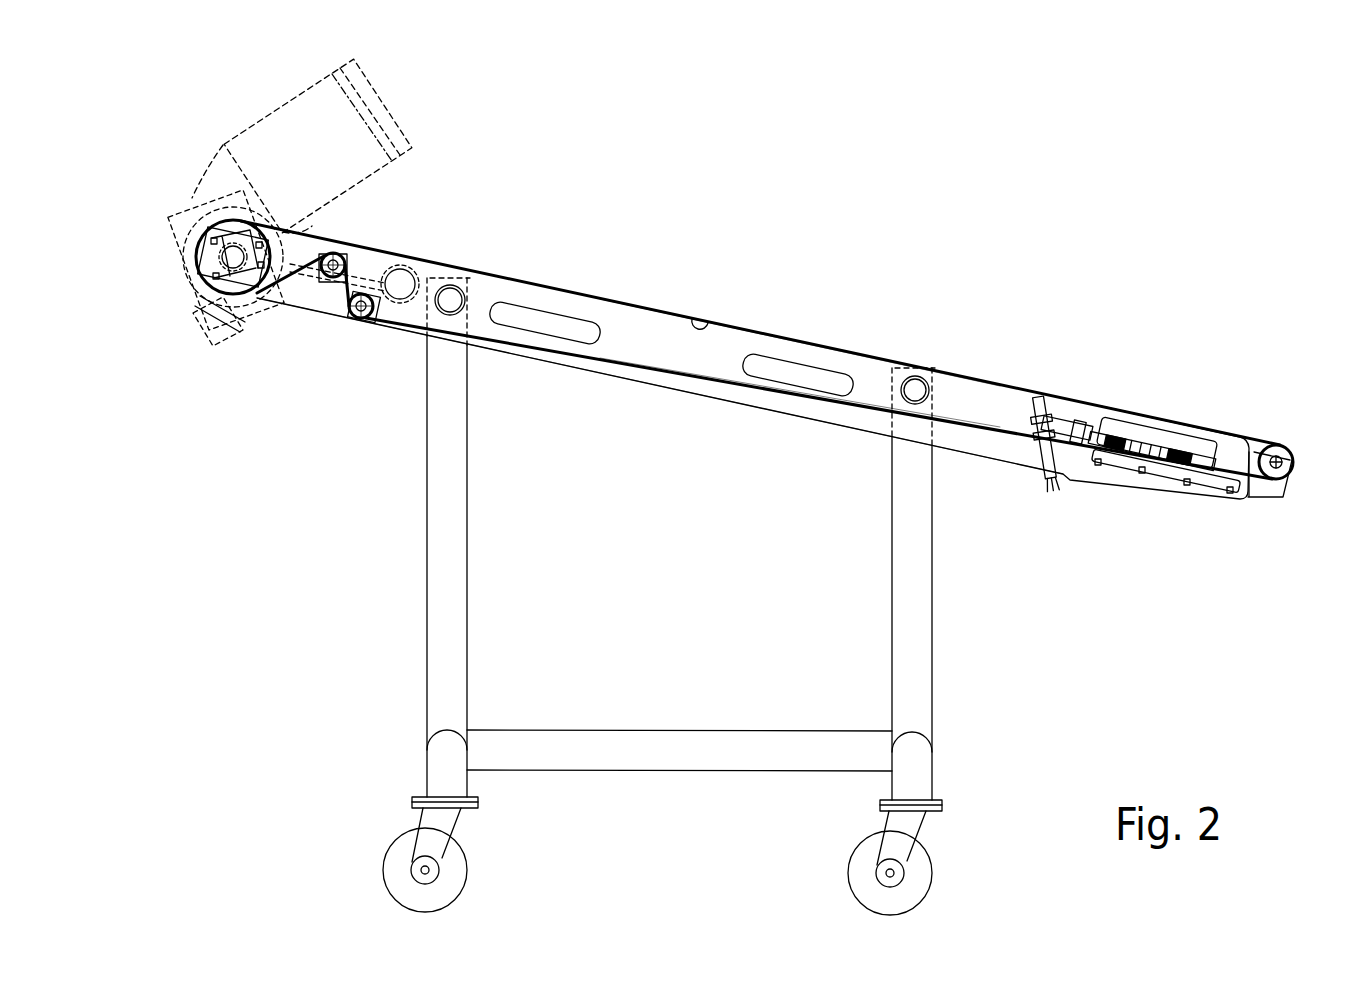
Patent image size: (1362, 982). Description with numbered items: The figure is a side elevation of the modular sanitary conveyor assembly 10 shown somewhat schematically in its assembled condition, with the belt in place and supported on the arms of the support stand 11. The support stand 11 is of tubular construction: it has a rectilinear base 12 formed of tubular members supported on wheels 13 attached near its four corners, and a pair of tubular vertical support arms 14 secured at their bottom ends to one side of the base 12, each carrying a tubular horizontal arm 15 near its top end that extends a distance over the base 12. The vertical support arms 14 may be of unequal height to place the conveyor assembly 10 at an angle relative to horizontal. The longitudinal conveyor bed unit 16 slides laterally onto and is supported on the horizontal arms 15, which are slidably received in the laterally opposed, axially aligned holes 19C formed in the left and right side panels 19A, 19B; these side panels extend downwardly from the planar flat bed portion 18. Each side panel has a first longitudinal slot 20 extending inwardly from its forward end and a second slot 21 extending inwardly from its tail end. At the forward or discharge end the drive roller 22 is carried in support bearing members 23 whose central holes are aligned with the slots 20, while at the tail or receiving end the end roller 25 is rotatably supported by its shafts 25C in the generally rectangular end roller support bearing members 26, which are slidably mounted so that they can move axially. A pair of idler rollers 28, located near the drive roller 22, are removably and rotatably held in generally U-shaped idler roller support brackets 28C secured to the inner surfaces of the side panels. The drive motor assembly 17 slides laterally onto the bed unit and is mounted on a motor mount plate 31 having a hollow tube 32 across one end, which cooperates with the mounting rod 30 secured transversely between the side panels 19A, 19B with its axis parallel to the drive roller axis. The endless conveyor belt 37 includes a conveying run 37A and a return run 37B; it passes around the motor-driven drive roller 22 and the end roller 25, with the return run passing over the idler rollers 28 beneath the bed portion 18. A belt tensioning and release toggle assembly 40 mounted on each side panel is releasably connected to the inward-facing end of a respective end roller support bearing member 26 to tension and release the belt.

The modular sanitary conveyor assembly 10 is at (1016, 242).
The support stand 11 is at (388, 576).
The rectilinear base 12 is at (732, 730).
The wheels 13 is at (470, 870).
The tubular vertical support arms 14 is at (470, 488).
The tubular horizontal arm 15 is at (460, 296).
The conveyor bed unit 16 is at (742, 402).
The drive motor assembly 17 is at (298, 106).
The flat bed portion 18 is at (706, 324).
The left side panel 19A is at (648, 386).
The right side panel 19B is at (750, 399).
The holes 19C is at (468, 298).
The first longitudinal slot 20 is at (202, 292).
The second slot 21 is at (1260, 448).
The drive roller 22 is at (203, 246).
The support bearing member 23 is at (237, 275).
The end roller 25 is at (1293, 470).
The shafts 25C is at (1290, 465).
The end roller support bearing member 26 is at (1268, 488).
The idler rollers 28 is at (340, 254).
The U-shaped idler roller support brackets 28C is at (320, 280).
The mounting rod 30 is at (406, 280).
The motor mount plate 31 is at (222, 328).
The hollow tube 32 is at (454, 238).
The conveyor belt 37 is at (628, 306).
The conveying run 37A is at (790, 338).
The return run 37B is at (806, 398).
The belt tensioning and release toggle assembly 40 is at (1148, 440).